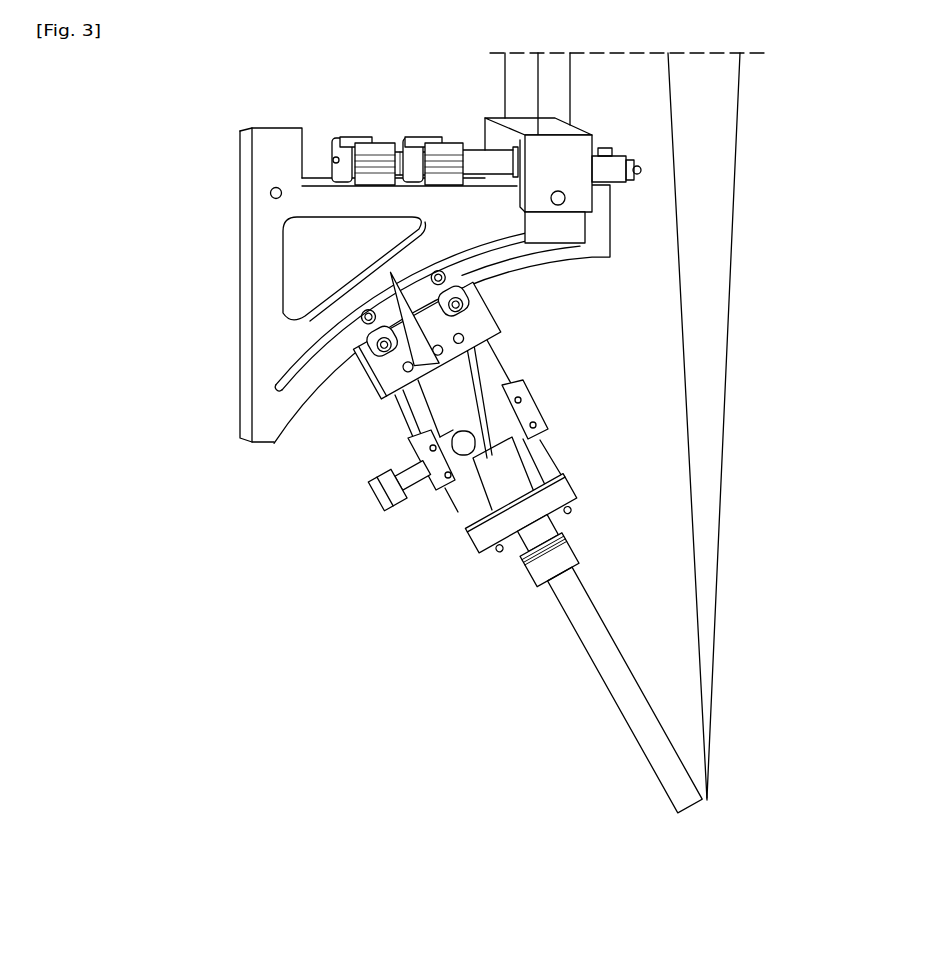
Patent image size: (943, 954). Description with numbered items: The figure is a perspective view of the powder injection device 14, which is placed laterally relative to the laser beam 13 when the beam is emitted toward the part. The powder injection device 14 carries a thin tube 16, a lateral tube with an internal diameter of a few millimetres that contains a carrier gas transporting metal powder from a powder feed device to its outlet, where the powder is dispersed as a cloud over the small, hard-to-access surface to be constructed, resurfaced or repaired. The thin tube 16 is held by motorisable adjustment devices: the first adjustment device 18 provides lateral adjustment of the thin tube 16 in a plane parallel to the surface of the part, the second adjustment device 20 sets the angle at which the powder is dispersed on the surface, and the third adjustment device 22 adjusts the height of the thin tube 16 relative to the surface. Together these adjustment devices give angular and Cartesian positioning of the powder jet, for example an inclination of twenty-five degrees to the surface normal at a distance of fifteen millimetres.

The laser beam 13 is at (707, 593).
The powder injection device 14 is at (190, 150).
The thin tube 16 is at (652, 752).
The first adjustment device 18 is at (314, 184).
The second adjustment device 20 is at (358, 396).
The third adjustment device 22 is at (381, 520).